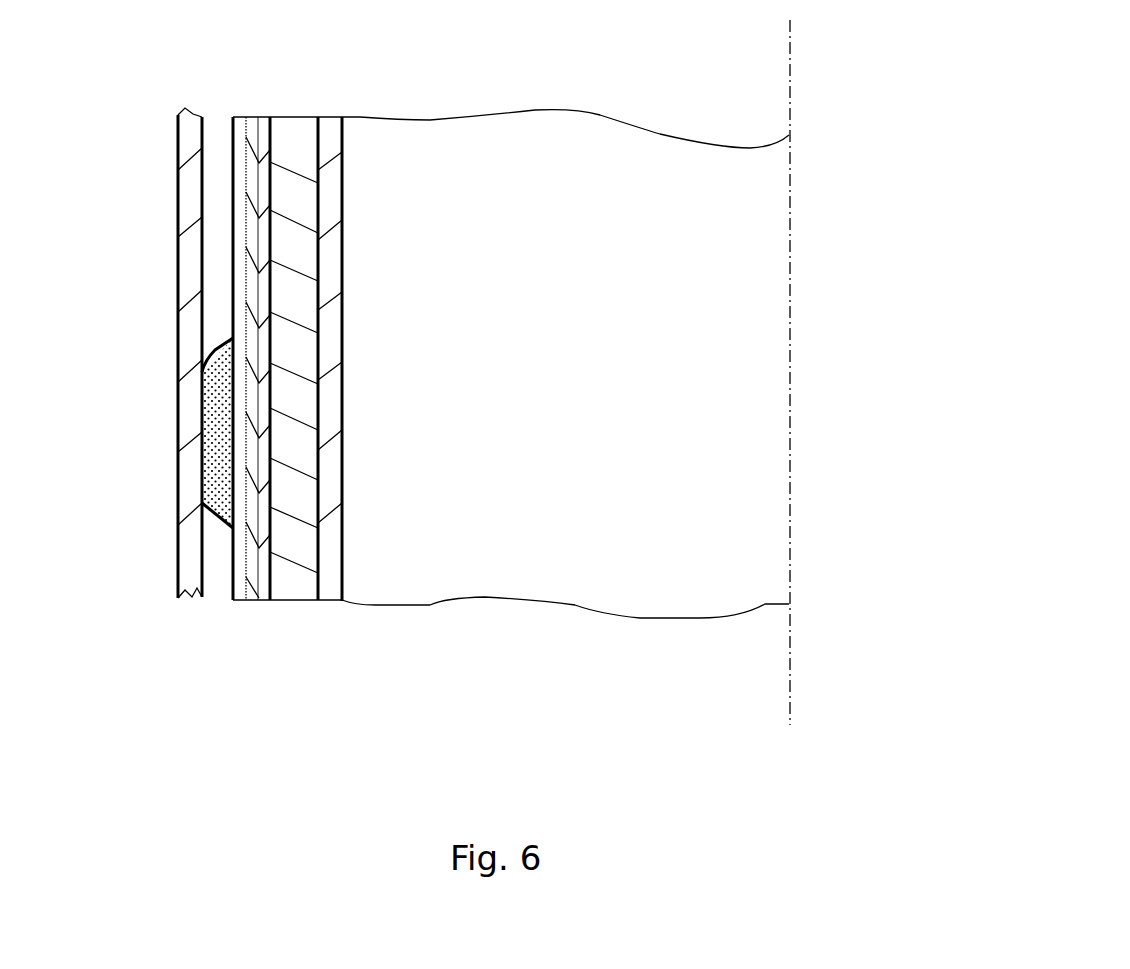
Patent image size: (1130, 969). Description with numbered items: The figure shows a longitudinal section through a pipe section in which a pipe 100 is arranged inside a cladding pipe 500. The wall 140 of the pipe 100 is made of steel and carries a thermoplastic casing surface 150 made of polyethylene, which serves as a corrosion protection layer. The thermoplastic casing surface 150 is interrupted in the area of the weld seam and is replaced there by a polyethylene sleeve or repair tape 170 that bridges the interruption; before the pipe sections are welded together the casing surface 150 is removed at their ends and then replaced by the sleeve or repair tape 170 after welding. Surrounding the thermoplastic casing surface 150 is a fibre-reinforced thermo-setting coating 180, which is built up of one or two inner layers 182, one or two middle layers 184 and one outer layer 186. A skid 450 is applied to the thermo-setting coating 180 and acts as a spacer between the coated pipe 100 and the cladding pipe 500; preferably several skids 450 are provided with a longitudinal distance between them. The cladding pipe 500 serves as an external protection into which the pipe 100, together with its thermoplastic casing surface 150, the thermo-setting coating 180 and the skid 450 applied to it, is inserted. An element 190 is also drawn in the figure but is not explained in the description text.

The pipe 100 is at (880, 421).
The wall 140 is at (335, 572).
The thermoplastic casing surface 150 is at (287, 223).
The polyethylene sleeve or repair tape 170 is at (283, 345).
The thermo-setting coating 180 is at (196, 317).
The inner layer 182 is at (266, 123).
The middle layer 184 is at (245, 126).
The outer layer 186 is at (243, 187).
The adhesive layer 190 is at (238, 543).
The skid 450 is at (206, 460).
The cladding pipe 500 is at (190, 398).